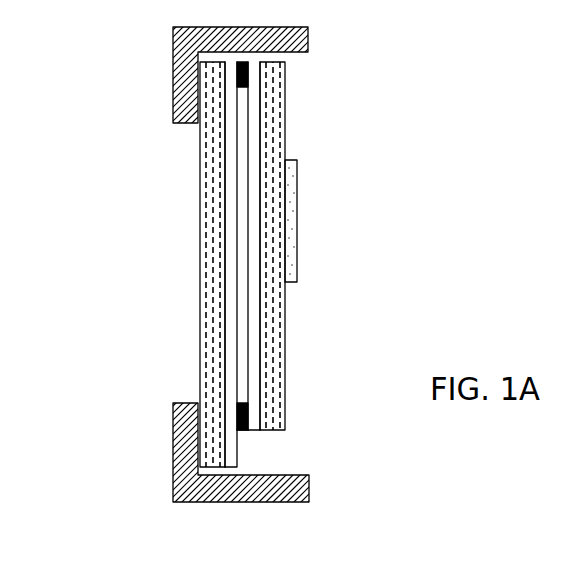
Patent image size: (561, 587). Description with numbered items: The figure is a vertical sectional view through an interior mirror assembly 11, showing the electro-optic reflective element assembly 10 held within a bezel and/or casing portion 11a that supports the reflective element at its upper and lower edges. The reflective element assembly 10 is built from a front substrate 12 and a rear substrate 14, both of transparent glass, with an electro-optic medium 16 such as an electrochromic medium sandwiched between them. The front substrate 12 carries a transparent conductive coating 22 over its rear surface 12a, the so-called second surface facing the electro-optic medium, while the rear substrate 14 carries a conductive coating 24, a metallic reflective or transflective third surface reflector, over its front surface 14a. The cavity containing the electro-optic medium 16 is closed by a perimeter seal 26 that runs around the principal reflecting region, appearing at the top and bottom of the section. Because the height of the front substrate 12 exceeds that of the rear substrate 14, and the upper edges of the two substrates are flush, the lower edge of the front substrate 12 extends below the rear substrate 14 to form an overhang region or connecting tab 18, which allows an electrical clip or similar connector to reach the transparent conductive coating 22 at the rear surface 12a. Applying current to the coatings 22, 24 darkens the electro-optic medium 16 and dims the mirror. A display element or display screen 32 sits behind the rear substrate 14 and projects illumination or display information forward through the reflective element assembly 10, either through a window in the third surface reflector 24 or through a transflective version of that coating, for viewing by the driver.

The electro-optic reflective element assembly 10 is at (418, 113).
The interior mirror assembly 11 is at (219, 289).
The bezel and/or casing portion 11a is at (173, 73).
The front substrate 12 is at (202, 263).
The rear surface of front substrate 12a is at (222, 137).
The rear substrate 14 is at (278, 312).
The front surface of rear substrate 14a is at (262, 130).
The electro-optic medium 16 is at (240, 388).
The overhang region or connecting tab 18 is at (252, 455).
The transparent conductive coating 22 is at (232, 205).
The conductive coating 24 is at (257, 358).
The perimeter seal 26 is at (242, 57).
The display element or display screen 32 is at (297, 213).